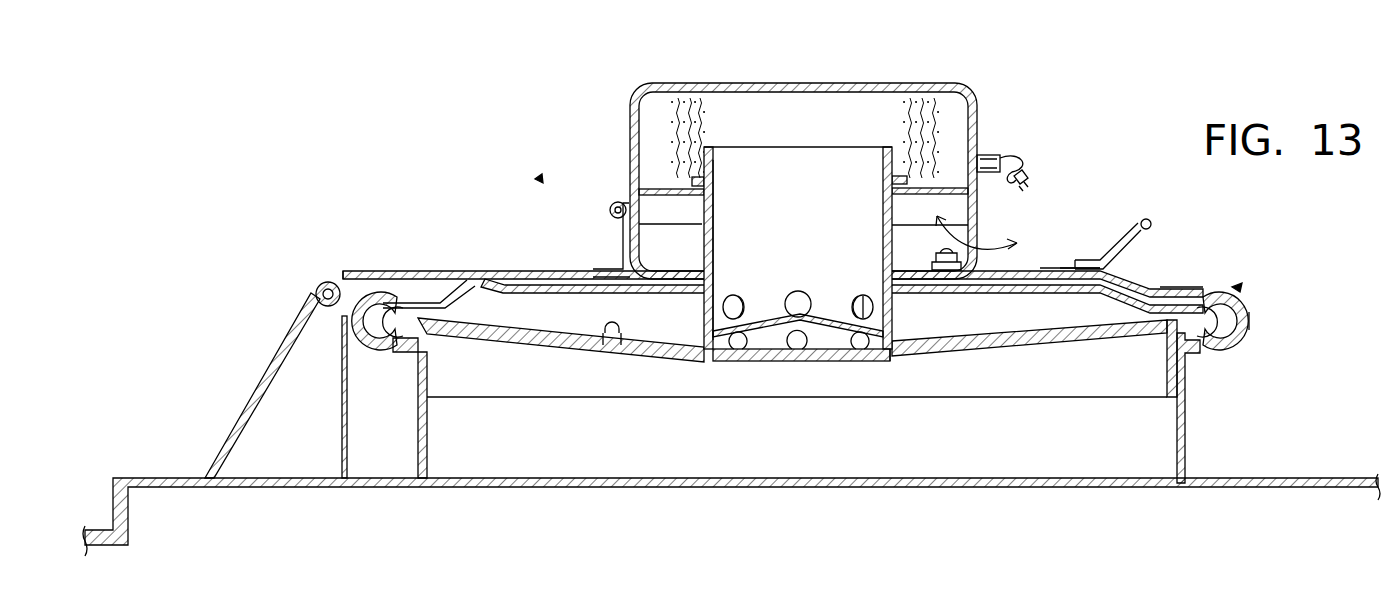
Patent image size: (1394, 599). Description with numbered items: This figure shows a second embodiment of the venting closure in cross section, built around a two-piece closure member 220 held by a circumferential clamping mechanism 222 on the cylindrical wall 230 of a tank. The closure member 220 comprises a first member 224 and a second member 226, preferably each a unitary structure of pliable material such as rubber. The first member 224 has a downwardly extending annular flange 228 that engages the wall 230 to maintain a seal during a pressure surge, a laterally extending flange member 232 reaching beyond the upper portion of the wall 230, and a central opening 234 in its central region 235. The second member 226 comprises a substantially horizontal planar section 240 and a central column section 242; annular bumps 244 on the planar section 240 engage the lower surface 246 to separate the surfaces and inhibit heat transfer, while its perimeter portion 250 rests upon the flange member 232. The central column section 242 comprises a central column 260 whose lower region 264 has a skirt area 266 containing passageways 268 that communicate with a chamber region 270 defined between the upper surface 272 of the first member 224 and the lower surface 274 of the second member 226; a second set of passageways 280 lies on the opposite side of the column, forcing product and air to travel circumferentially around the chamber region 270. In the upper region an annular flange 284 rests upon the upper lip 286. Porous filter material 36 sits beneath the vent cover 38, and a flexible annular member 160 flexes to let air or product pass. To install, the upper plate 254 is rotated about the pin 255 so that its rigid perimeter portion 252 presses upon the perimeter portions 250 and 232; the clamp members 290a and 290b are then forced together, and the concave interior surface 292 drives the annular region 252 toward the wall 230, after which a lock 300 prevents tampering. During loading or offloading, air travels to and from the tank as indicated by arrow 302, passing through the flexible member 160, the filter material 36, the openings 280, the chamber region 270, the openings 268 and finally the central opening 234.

The porous filter material 36 is at (684, 128).
The vent cover 38 is at (897, 85).
The flexible annular member 160 is at (932, 192).
The two-piece closure member 220 is at (542, 180).
The circumferential clamping mechanism 222 is at (1241, 291).
The first member 224 is at (970, 380).
The second member 226 is at (1038, 287).
The annular flange 228 is at (430, 376).
The cylindrical wall 230 is at (423, 412).
The laterally extending flange member 232 is at (387, 333).
The central opening 234 is at (773, 357).
The central region 235 is at (878, 355).
The horizontal planar section 240 is at (522, 289).
The central column section 242 is at (713, 197).
The annular bumps 244 is at (667, 279).
The lower surface 246 is at (543, 287).
The perimeter portion 250 is at (407, 313).
The rigid perimeter portion 252 is at (1173, 290).
The upper plate 254 is at (1017, 272).
The pin 255 is at (327, 290).
The central column 260 is at (713, 218).
The lower region 264 is at (752, 155).
The skirt area 266 is at (897, 335).
The passageways 268 is at (735, 345).
The chamber region 270 is at (998, 313).
The upper surface 272 is at (619, 333).
The lower surface 274 is at (605, 333).
The second set of passageways 280 is at (867, 308).
The annular flange 284 is at (696, 176).
The upper lip 286 is at (690, 187).
The first clamp member 290a is at (1240, 318).
The second clamp member 290b is at (371, 297).
The interior surface 292 is at (352, 323).
The lock 300 is at (1020, 170).
The arrow 302 is at (1018, 243).